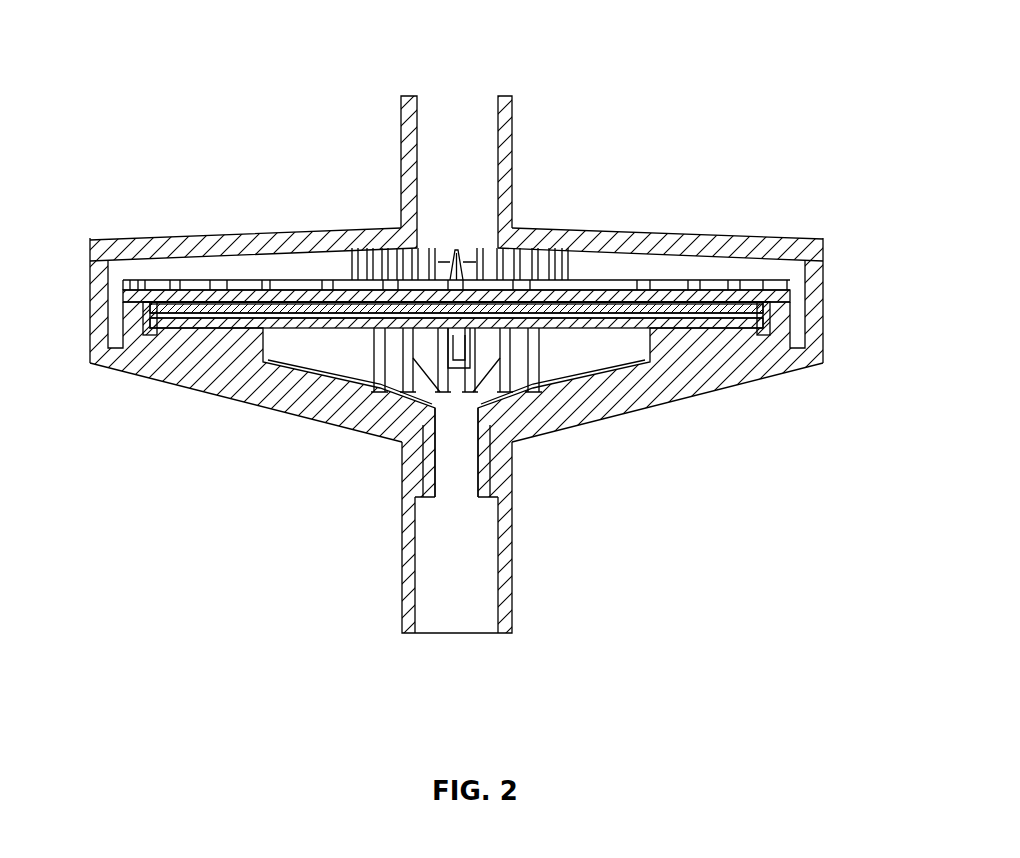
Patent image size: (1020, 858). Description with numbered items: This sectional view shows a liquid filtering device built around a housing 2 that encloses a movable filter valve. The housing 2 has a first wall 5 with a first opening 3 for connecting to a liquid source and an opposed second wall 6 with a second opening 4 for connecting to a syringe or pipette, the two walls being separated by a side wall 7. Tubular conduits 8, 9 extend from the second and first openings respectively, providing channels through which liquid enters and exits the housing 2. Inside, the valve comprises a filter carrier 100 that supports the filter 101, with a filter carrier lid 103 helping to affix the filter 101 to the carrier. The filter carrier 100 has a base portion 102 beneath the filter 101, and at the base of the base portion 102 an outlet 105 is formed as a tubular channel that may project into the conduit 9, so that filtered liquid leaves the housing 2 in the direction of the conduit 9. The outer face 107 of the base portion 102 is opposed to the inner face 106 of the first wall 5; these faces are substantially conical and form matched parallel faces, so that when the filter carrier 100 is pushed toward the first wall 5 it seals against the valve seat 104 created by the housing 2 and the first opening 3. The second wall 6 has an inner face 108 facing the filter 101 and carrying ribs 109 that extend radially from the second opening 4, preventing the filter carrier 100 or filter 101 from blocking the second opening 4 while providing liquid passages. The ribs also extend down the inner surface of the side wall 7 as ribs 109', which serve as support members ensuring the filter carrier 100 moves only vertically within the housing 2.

The housing 2 is at (474, 319).
The first opening 3 is at (493, 426).
The second opening 4 is at (462, 243).
The first wall 5 is at (487, 435).
The second wall 6 is at (456, 198).
The side wall 7 is at (813, 336).
The conduit 8 is at (505, 118).
The conduit 9 is at (505, 571).
The filter carrier 100 is at (780, 336).
The filter 101 is at (695, 314).
The base portion 102 is at (210, 356).
The filter carrier lid 103 is at (718, 296).
The valve seat 104 is at (402, 430).
The outlet 105 is at (425, 478).
The inner face 106 is at (622, 392).
The outer face 107 is at (158, 363).
The inner face 108 is at (264, 254).
The ribs 109 is at (286, 178).
The ribs 109' is at (692, 228).